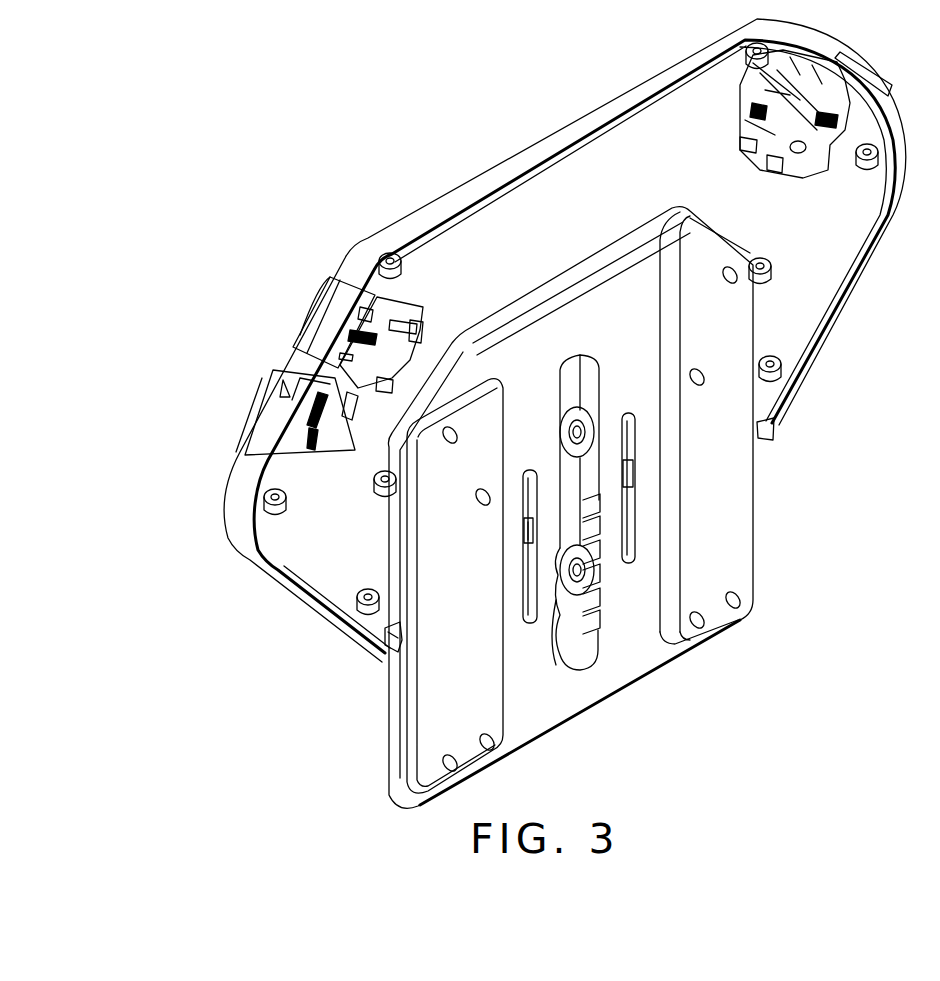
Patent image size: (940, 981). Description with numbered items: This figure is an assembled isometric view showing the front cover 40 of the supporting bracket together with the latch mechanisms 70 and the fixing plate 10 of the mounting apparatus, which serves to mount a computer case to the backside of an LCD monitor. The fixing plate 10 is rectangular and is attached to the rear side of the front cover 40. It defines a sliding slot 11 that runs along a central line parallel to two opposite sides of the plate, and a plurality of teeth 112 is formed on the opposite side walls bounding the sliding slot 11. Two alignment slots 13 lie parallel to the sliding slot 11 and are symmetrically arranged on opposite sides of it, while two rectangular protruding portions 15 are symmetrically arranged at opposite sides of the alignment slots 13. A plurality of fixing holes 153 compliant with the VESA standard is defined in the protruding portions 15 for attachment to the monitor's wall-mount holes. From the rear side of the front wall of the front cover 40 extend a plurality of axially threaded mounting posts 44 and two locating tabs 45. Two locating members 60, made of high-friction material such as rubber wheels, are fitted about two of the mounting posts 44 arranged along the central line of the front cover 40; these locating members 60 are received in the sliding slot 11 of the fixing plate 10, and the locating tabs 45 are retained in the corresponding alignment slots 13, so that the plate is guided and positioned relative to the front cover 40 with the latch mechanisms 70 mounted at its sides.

The fixing plate 10 is at (640, 273).
The sliding slot 11 is at (572, 642).
The teeth 112 is at (582, 636).
The alignment slots 13 is at (627, 533).
The protruding portions 15 is at (723, 497).
The fixing holes 153 is at (705, 377).
The front cover 40 is at (300, 537).
The mounting posts 44 is at (572, 583).
The locating tabs 45 is at (526, 531).
The locating members 60 is at (573, 572).
The latch mechanisms 70 is at (420, 297).